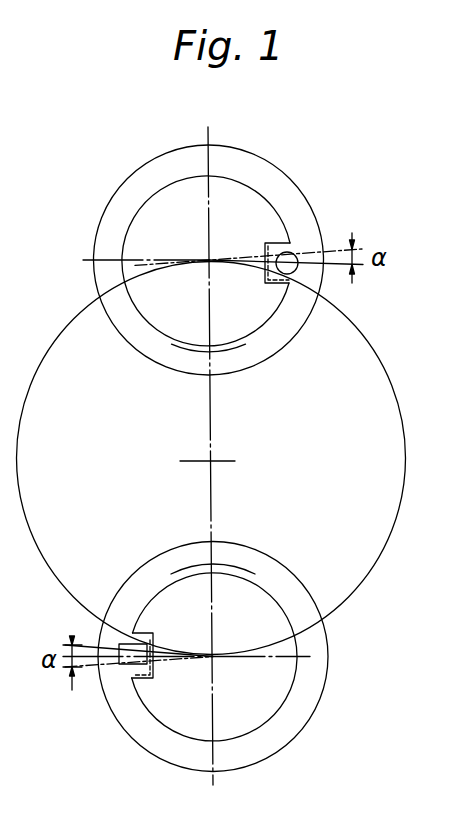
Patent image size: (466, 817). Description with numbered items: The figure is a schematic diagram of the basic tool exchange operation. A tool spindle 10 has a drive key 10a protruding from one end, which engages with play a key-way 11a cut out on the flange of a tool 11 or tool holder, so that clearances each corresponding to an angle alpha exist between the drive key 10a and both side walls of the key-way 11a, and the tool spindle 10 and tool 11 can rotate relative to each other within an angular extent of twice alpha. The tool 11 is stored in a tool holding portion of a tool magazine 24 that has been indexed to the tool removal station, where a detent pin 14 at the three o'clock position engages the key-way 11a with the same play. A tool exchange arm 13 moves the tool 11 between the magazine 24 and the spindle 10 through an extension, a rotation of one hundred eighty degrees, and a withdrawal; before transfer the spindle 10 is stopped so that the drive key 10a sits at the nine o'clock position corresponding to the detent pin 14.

The tool spindle 10 is at (133, 727).
The drive key 10a is at (136, 644).
The tool 11 is at (162, 212).
The key-way 11a is at (132, 674).
The tool exchange arm 13 is at (219, 448).
The detent pin 14 is at (292, 251).
The tool magazine 24 is at (272, 155).